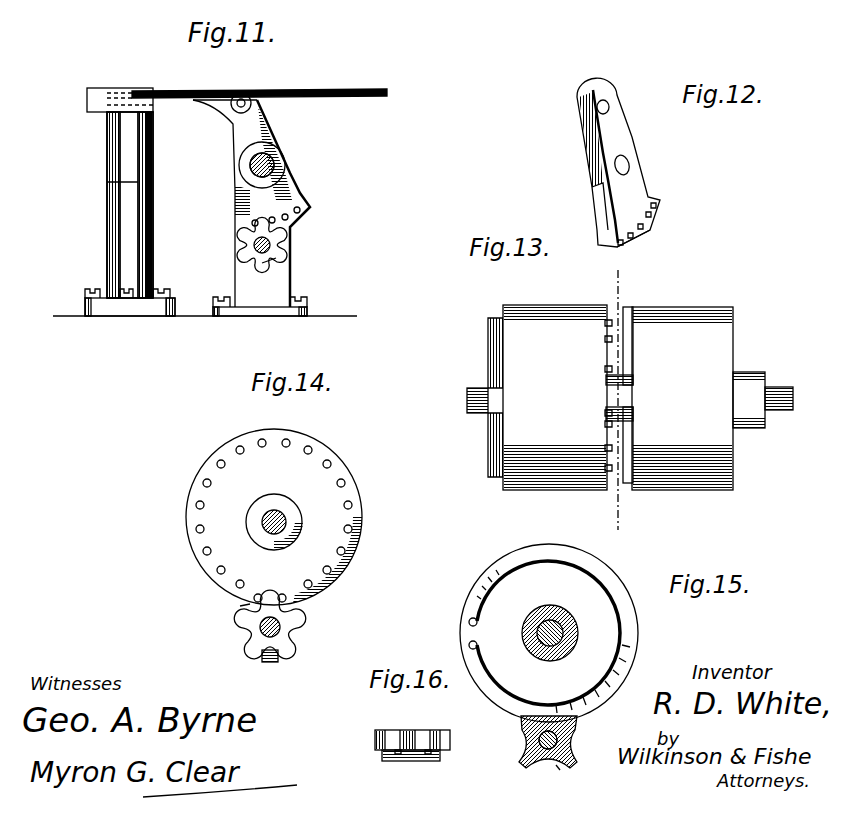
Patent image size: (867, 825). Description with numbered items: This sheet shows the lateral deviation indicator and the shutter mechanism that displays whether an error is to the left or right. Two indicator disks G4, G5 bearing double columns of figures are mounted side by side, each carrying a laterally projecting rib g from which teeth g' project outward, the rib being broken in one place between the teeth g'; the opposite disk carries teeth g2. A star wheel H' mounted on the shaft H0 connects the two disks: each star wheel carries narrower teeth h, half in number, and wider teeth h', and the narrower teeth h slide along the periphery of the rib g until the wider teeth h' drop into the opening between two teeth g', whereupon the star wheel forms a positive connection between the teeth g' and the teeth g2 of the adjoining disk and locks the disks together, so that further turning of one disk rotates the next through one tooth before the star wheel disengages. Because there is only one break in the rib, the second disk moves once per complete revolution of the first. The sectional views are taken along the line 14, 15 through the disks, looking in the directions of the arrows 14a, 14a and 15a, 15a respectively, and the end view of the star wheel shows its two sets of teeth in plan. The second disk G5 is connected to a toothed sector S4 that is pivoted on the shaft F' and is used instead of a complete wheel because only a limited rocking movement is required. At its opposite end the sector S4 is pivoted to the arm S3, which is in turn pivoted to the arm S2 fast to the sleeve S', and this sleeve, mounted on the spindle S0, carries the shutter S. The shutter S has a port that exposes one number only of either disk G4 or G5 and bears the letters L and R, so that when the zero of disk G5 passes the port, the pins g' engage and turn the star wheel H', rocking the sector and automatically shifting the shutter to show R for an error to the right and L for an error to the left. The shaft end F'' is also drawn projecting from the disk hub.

In FIG. 11, the shutter S is at (259, 81).
In FIG. 11, the sleeve S' is at (102, 205).
In FIG. 11, the arm S2 is at (87, 98).
In FIG. 11, the arm S3 is at (247, 98).
In FIG. 11, the toothed sector S4 is at (272, 122).
In FIG. 12, the toothed sector S4 is at (588, 150).
In FIG. 11, the spindle S0 is at (117, 233).
In FIG. 12, the spindle S0 is at (629, 160).
In FIG. 11, the shaft F' is at (226, 171).
In FIG. 14, the shaft F' is at (222, 503).
In FIG. 15, the shaft F' is at (546, 657).
In FIG. 13, the shaft end F'' is at (787, 383).
In FIG. 11, the narrower teeth h is at (291, 277).
In FIG. 14, the narrower teeth h is at (215, 615).
In FIG. 15, the narrower teeth h is at (576, 778).
In FIG. 16, the narrower teeth h is at (428, 765).
In FIG. 11, the wider teeth h' is at (238, 221).
In FIG. 14, the wider teeth h' is at (297, 645).
In FIG. 16, the wider teeth h' is at (432, 730).
In FIG. 11, the star wheel H' is at (232, 253).
In FIG. 14, the star wheel H' is at (292, 646).
In FIG. 15, the star wheel H' is at (548, 764).
In FIG. 16, the star wheel H' is at (412, 760).
In FIG. 11, the shaft H0 is at (283, 250).
In FIG. 14, the shaft H0 is at (262, 628).
In FIG. 15, the shaft H0 is at (576, 738).
In FIG. 13, the rib g is at (600, 418).
In FIG. 15, the rib g is at (549, 624).
In FIG. 13, the teeth g' is at (614, 395).
In FIG. 15, the teeth g' is at (450, 631).
In FIG. 13, the teeth g2 is at (614, 322).
In FIG. 14, the teeth g2 is at (351, 507).
In FIG. 13, the indicator disk G4 is at (736, 372).
In FIG. 15, the indicator disk G4 is at (603, 628).
In FIG. 13, the indicator disk G5 is at (495, 480).
In FIG. 14, the indicator disk G5 is at (322, 560).
In FIG. 13, the section line 14 is at (616, 283).
In FIG. 13, the viewing arrows 14a is at (630, 288).
In FIG. 13, the section line 15 is at (622, 529).
In FIG. 13, the viewing arrows 15a is at (604, 284).